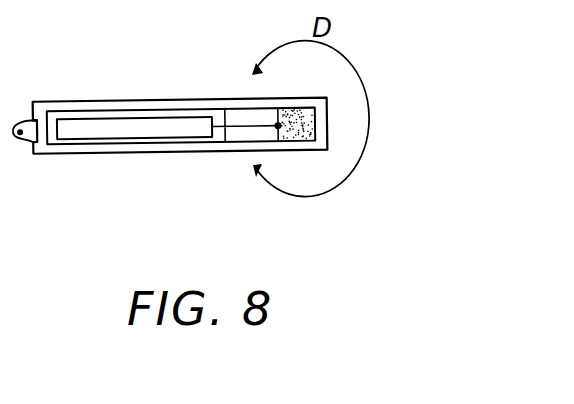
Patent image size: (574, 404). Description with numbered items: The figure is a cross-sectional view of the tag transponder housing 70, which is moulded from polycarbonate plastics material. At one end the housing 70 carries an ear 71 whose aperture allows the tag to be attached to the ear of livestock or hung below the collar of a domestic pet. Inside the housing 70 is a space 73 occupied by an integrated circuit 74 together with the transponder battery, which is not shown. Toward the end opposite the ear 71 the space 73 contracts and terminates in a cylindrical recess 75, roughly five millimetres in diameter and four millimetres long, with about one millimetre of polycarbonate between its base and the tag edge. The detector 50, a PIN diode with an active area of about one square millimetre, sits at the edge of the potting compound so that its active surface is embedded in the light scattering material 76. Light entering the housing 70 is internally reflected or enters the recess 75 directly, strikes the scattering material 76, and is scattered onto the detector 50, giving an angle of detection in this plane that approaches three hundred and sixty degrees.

The tag transponder housing 70 is at (50, 97).
The ear 71 is at (31, 140).
The space 73 is at (130, 147).
The integrated circuit 74 is at (100, 126).
The cylindrical recess 75 is at (292, 112).
The light scattering material 76 is at (292, 142).
The detector 50 is at (276, 129).